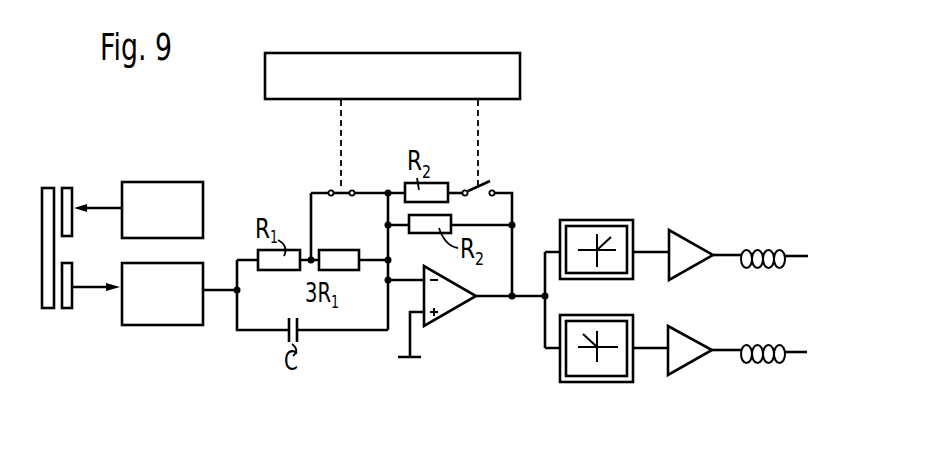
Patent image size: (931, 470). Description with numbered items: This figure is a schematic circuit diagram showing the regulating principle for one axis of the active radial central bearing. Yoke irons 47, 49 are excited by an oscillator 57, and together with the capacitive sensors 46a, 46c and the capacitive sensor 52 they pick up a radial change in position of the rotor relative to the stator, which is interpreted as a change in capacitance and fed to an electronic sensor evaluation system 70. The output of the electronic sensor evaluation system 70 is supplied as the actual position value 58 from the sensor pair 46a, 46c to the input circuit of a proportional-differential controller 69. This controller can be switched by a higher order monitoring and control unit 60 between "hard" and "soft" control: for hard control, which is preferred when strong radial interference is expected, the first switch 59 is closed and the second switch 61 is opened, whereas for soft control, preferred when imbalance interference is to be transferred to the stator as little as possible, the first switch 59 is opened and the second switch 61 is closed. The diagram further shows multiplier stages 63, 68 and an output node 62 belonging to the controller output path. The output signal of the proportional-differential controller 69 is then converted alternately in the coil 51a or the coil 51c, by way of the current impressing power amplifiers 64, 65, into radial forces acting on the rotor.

The capacitive sensor 46a is at (76, 310).
The capacitive sensor 46c is at (67, 311).
The yoke iron 47 is at (91, 188).
The yoke iron 49 is at (73, 198).
The coil 51a is at (759, 251).
The coil 51c is at (753, 366).
The capacitive sensor 52 is at (47, 187).
The oscillator 57 is at (153, 193).
The actual position value 58 is at (215, 284).
The switch S1 59 is at (340, 190).
The higher order monitoring and control unit 60 is at (364, 64).
The switch S2 61 is at (475, 187).
The output node 62 is at (529, 292).
The multiplier stage 63 is at (591, 227).
The current impressing power amplifier 64 is at (689, 237).
The current impressing power amplifier 65 is at (683, 361).
The multiplier stage 68 is at (598, 383).
The proportional-differential controller 69 is at (444, 305).
The electronic sensor evaluation system 70 is at (163, 320).